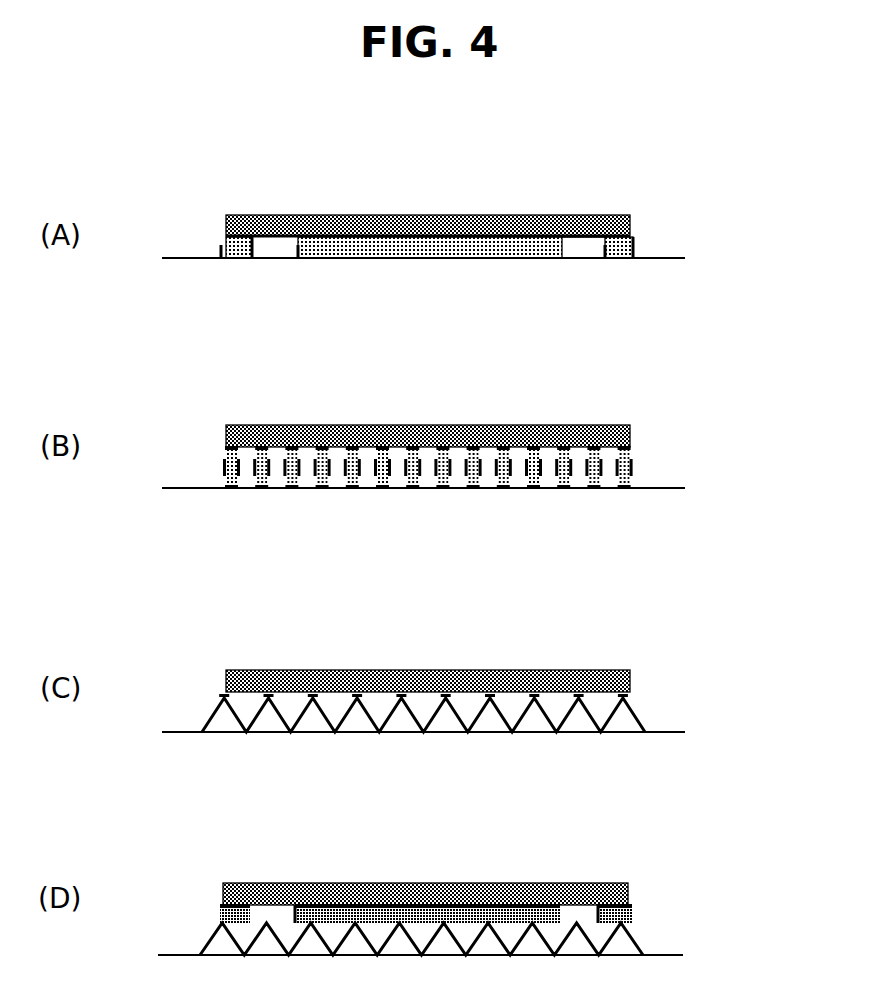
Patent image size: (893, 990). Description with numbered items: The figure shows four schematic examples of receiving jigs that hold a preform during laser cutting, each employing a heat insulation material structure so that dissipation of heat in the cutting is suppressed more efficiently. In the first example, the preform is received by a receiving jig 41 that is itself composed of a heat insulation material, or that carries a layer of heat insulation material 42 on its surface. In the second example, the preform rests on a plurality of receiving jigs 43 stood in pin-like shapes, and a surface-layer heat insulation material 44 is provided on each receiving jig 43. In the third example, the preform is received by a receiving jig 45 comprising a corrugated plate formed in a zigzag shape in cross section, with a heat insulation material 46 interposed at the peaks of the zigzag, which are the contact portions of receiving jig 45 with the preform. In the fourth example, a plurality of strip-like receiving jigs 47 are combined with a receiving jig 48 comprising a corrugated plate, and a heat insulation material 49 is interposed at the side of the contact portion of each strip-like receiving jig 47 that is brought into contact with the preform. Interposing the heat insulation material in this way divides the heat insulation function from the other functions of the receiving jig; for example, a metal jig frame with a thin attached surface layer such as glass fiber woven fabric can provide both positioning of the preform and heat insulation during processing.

The receiving jig 41 is at (642, 248).
The heat insulation material 42 is at (636, 232).
The receiving jig 43 is at (633, 462).
The surface-layer heat insulation material 44 is at (597, 488).
The receiving jig 45 is at (634, 714).
The heat insulation material 46 is at (222, 694).
The strip-like receiving jig 47 is at (625, 912).
The receiving jig 48 is at (638, 938).
The heat insulation material 49 is at (221, 905).